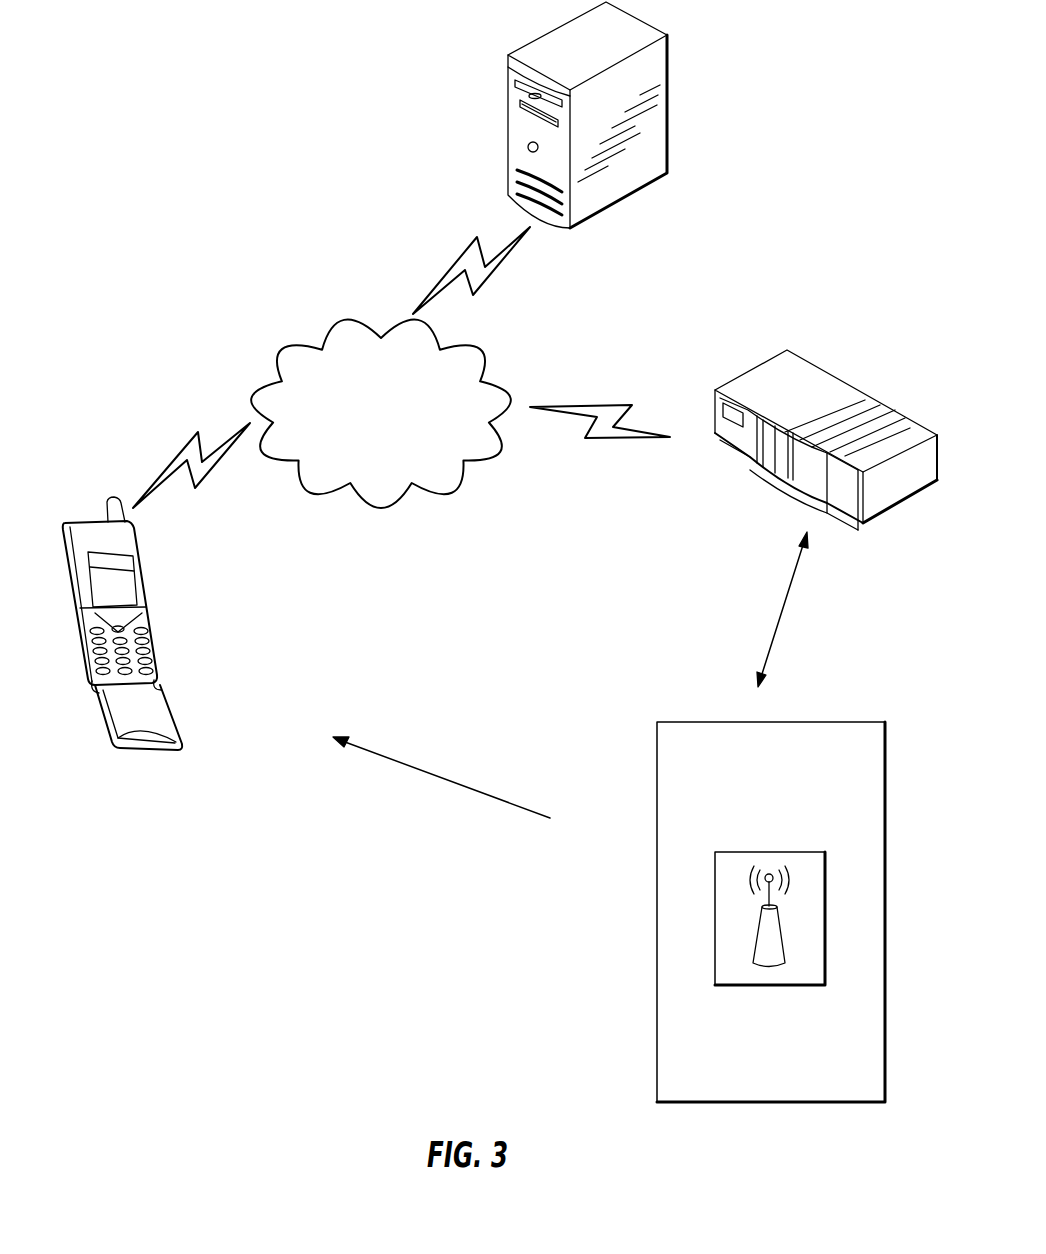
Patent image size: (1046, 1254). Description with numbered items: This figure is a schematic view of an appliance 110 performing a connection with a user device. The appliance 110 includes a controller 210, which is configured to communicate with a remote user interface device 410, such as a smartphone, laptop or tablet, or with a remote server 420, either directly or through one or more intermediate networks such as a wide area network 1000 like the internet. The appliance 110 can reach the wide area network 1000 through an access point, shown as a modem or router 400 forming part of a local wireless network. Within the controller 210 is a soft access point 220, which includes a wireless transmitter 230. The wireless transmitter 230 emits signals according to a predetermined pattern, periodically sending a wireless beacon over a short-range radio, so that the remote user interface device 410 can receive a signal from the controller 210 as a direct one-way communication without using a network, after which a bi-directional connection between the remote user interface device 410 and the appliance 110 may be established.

The remote server 420 is at (660, 118).
The modem or router 400 is at (773, 378).
The wide area network 1000 is at (380, 503).
The remote user interface device 410 is at (153, 637).
The appliance 110 is at (657, 983).
The controller 210 is at (737, 848).
The soft access point 220 is at (768, 968).
The wireless transmitter 230 is at (771, 856).